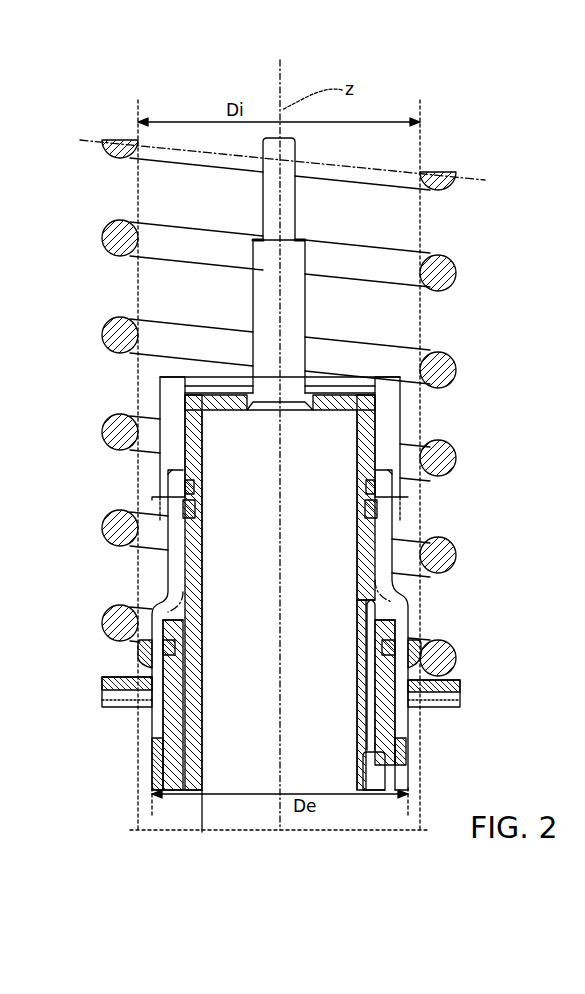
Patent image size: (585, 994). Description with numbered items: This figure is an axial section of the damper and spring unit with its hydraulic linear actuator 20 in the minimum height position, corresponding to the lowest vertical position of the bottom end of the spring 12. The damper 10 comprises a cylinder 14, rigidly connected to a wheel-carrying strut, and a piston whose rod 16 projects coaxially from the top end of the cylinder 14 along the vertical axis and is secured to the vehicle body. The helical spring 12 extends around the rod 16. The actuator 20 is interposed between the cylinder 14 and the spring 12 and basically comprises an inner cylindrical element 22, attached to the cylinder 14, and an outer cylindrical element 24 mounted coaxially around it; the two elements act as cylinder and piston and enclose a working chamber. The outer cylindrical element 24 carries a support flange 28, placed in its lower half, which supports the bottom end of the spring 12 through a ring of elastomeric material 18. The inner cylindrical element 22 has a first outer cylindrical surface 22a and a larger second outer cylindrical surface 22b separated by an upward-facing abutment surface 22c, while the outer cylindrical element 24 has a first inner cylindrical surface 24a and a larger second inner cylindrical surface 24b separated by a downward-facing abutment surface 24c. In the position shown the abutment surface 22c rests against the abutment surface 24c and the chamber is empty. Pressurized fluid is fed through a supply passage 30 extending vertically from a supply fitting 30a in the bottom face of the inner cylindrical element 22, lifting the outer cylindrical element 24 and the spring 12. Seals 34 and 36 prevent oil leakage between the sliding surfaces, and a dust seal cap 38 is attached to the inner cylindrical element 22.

The damper 10 is at (253, 305).
The spring 12 is at (106, 232).
The cylinder 14 is at (378, 532).
The rod 16 is at (305, 262).
The ring of elastomeric material 18 is at (440, 692).
The hydraulic linear actuator 20 is at (153, 572).
The inner cylindrical element 22 is at (394, 580).
The first outer cylindrical surface 22a is at (394, 516).
The second outer cylindrical surface 22b is at (410, 745).
The abutment surface 22c is at (400, 600).
The outer cylindrical element 24 is at (400, 634).
The first inner cylindrical surface 24a is at (165, 520).
The second inner cylindrical surface 24b is at (152, 708).
The abutment surface 24c is at (140, 648).
The support flange 28 is at (420, 702).
The supply passage 30 is at (388, 745).
The supply fitting 30a is at (372, 790).
The seal 34 is at (197, 512).
The seal 36 is at (177, 648).
The dust seal cap 38 is at (388, 376).